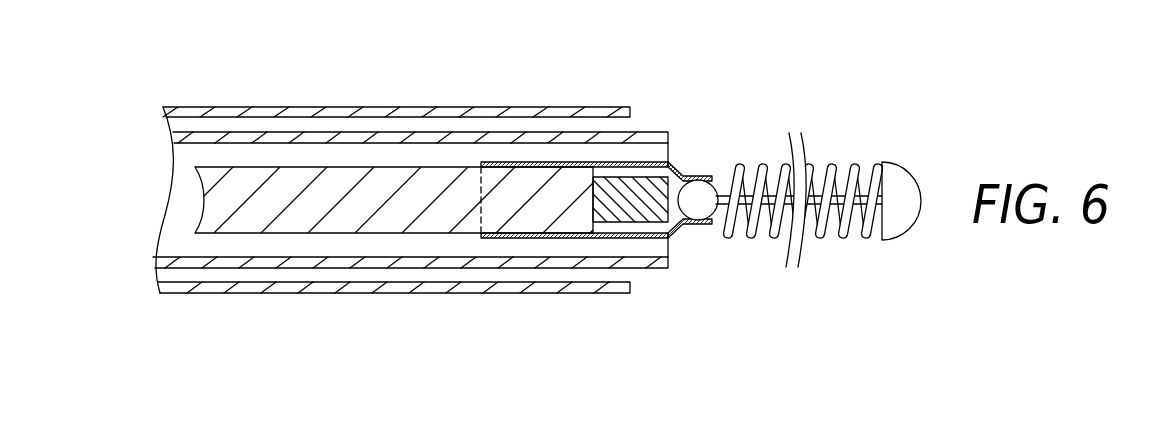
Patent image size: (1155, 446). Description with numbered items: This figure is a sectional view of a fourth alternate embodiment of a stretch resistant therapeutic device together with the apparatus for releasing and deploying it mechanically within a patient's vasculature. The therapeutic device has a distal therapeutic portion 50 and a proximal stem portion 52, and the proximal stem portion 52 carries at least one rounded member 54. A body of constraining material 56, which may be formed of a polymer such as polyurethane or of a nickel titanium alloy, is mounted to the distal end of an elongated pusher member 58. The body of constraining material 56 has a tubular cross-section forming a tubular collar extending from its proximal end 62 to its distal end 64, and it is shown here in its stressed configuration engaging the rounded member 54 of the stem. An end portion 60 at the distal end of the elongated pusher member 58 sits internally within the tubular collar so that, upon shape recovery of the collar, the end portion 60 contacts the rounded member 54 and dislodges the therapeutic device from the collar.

The distal therapeutic portion 50 is at (840, 142).
The proximal stem portion 52 is at (780, 143).
The rounded member 54 is at (701, 207).
The body of constraining material 56 is at (688, 177).
The elongated pusher member 58 is at (340, 167).
The end portion 60 is at (648, 213).
The proximal end 62 is at (487, 162).
The distal end 64 is at (713, 176).